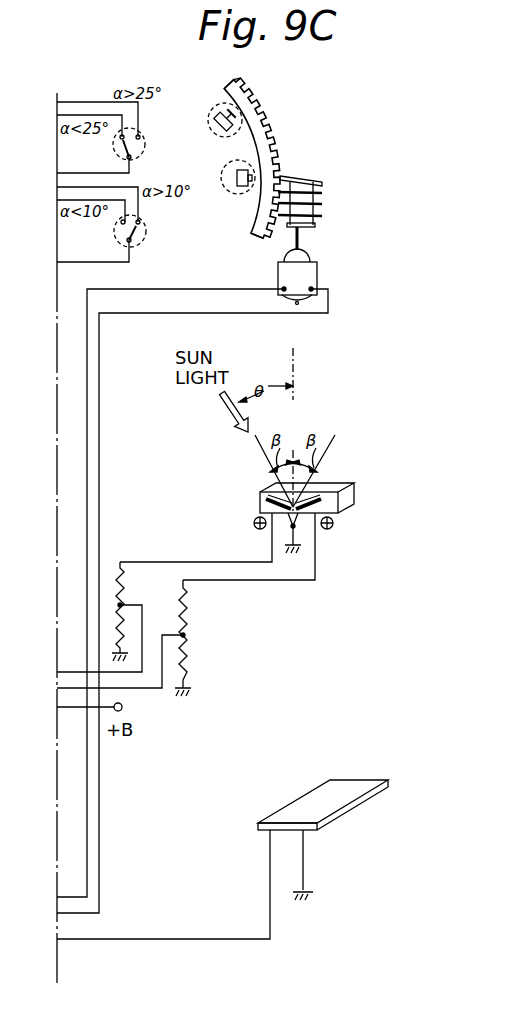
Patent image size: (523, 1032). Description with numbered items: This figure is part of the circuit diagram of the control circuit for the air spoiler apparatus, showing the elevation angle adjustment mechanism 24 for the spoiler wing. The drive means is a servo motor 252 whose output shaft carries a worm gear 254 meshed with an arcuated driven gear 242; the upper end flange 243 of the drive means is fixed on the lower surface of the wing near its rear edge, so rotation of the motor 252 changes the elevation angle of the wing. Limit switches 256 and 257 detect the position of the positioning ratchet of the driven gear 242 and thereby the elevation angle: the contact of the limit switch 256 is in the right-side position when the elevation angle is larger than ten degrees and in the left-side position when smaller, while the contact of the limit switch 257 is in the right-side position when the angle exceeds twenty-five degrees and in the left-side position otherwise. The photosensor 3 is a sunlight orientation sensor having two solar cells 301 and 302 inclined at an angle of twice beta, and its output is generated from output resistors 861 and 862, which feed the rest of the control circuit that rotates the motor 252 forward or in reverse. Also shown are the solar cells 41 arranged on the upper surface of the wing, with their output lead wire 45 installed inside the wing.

The elevation angle adjustment mechanism 24 is at (285, 111).
The arcuated driven gear 242 is at (235, 76).
The upper end flange 243 is at (259, 238).
The servo motor 252 is at (318, 272).
The worm gear 254 is at (323, 213).
The limit switch 256 is at (222, 192).
The limit switch 257 is at (208, 127).
The photosensor 3 is at (289, 494).
The solar cell 301 is at (322, 506).
The solar cell 302 is at (268, 505).
The output resistor 861 is at (190, 652).
The output resistor 862 is at (122, 621).
The solar cell 41 is at (338, 797).
The output lead wire 45 is at (272, 939).